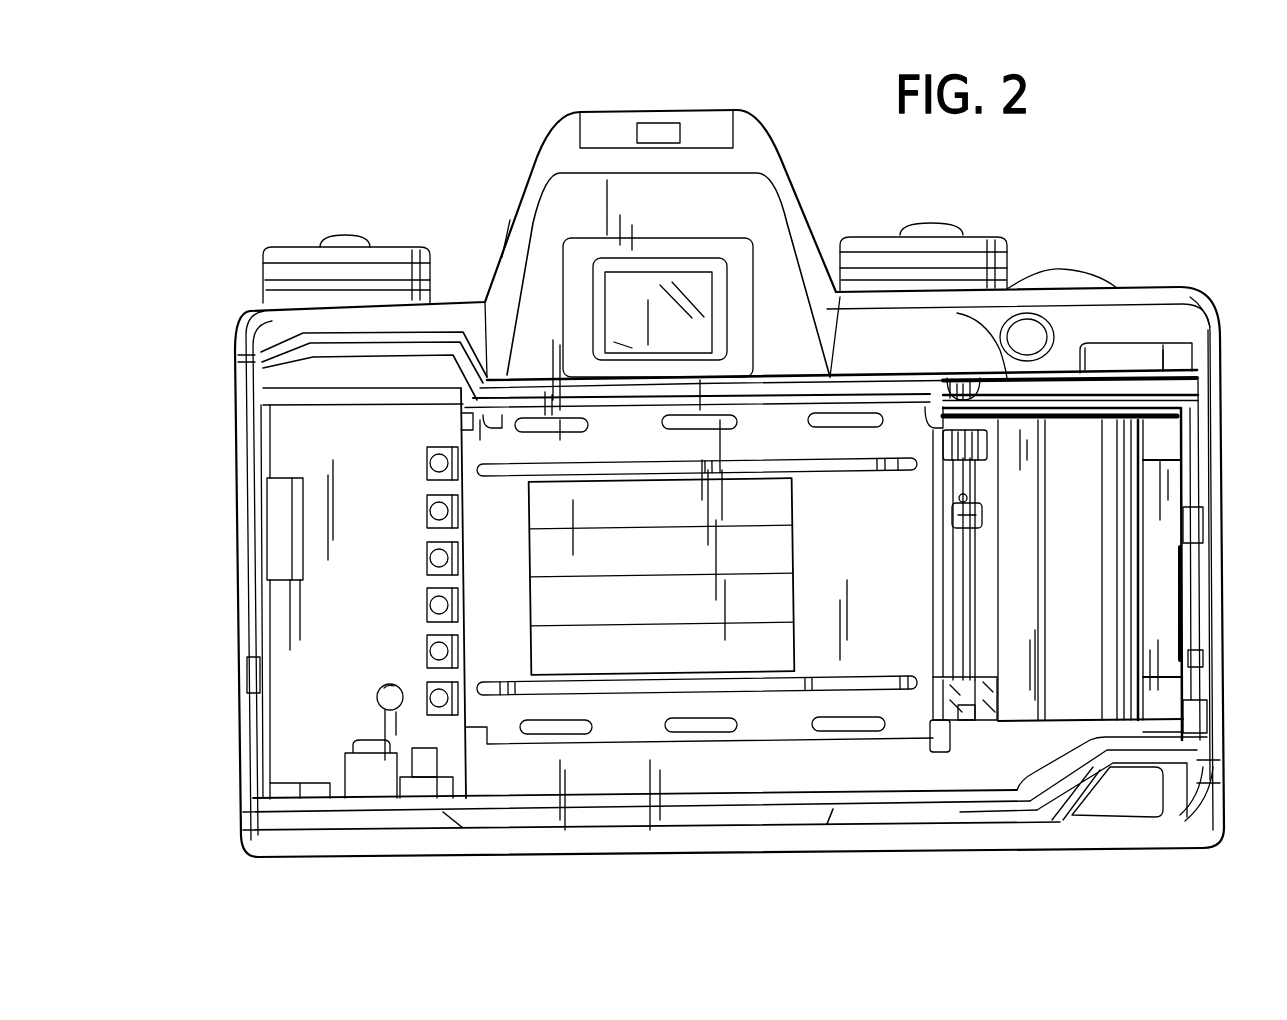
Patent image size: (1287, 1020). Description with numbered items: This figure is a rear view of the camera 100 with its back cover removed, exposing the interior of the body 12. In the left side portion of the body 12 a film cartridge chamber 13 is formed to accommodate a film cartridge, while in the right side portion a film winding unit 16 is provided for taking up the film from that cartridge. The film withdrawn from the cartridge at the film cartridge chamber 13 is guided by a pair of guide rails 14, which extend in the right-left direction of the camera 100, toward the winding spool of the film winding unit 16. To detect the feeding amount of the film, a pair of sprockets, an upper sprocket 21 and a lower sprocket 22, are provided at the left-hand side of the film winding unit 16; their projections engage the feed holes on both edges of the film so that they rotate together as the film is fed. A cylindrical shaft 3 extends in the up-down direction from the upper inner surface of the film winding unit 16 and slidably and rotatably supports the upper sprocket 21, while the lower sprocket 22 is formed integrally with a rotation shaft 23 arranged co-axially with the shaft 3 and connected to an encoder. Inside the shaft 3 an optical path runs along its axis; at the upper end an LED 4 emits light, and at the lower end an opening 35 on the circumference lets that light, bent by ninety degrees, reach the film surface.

The camera 100 is at (1091, 258).
The film cartridge chamber 13 is at (400, 423).
The body 12 is at (612, 720).
The guide rails 14 is at (822, 683).
The LED 4 is at (962, 378).
The upper sprocket 21 is at (941, 458).
The shaft 3 is at (975, 478).
The opening 35 is at (947, 515).
The shaft 23 is at (975, 582).
The lower sprocket 22 is at (950, 672).
The film winding unit 16 is at (1109, 610).